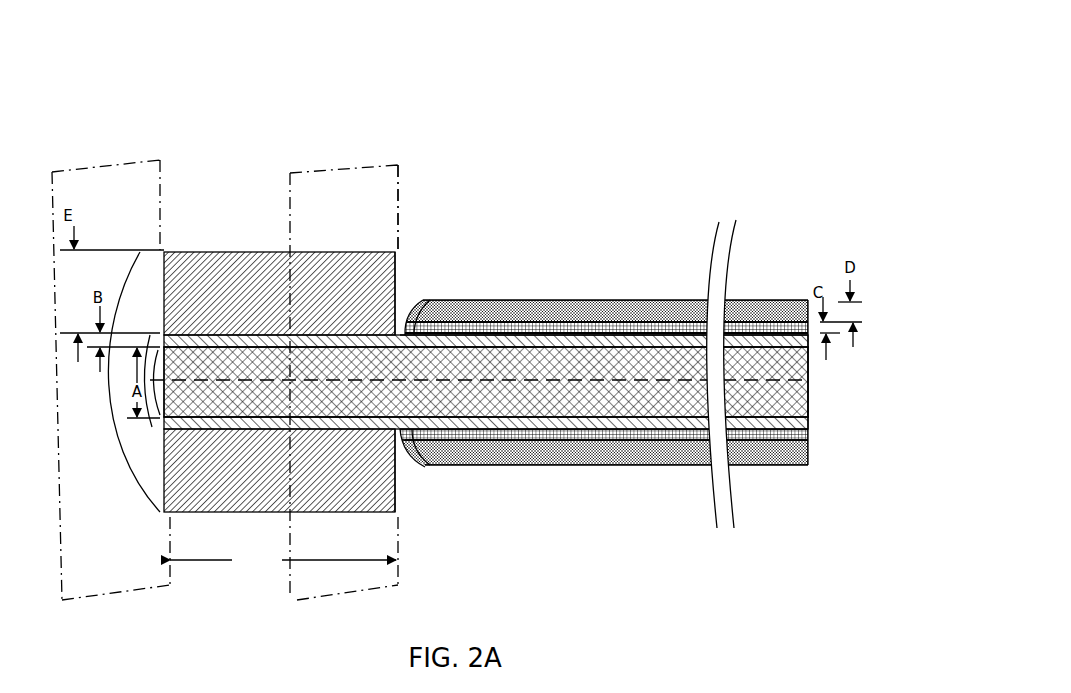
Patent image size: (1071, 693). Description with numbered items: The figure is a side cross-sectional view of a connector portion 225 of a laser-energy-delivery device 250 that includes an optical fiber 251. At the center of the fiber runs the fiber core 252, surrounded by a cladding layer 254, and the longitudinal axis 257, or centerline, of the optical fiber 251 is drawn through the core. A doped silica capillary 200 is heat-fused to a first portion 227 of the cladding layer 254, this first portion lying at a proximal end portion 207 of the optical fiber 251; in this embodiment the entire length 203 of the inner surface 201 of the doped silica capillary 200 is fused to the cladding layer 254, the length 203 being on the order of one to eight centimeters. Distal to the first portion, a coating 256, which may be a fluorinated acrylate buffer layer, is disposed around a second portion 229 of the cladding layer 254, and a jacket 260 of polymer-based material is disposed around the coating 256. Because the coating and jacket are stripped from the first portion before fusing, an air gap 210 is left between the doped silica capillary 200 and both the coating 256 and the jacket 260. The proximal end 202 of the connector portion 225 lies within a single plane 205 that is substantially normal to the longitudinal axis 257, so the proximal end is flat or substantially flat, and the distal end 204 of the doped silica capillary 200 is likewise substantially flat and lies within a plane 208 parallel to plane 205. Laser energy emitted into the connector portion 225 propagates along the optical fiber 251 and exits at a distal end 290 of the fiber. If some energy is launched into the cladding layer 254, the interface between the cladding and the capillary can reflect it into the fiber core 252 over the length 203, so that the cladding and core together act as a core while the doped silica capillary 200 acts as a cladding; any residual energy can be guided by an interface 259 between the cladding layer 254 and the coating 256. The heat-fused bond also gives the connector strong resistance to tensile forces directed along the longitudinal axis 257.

The doped silica capillary 200 is at (345, 270).
The inner surface 201 is at (305, 427).
The proximal end 202 is at (140, 283).
The length 203 is at (283, 560).
The distal end 204 is at (398, 268).
The plane 205 is at (143, 200).
The proximal end portion 207 is at (263, 207).
The plane 208 is at (386, 166).
The air gap 210 is at (408, 456).
The connector portion 225 is at (479, 312).
The first portion 227 is at (262, 344).
The second portion 229 is at (607, 346).
The laser-energy-delivery device 250 is at (486, 307).
The optical fiber 251 is at (660, 487).
The fiber core 252 is at (650, 360).
The cladding layer 254 is at (590, 336).
The coating 256 is at (522, 325).
The longitudinal axis 257 is at (447, 375).
The interface 259 is at (558, 330).
The jacket 260 is at (485, 308).
The distal end 290 is at (793, 250).